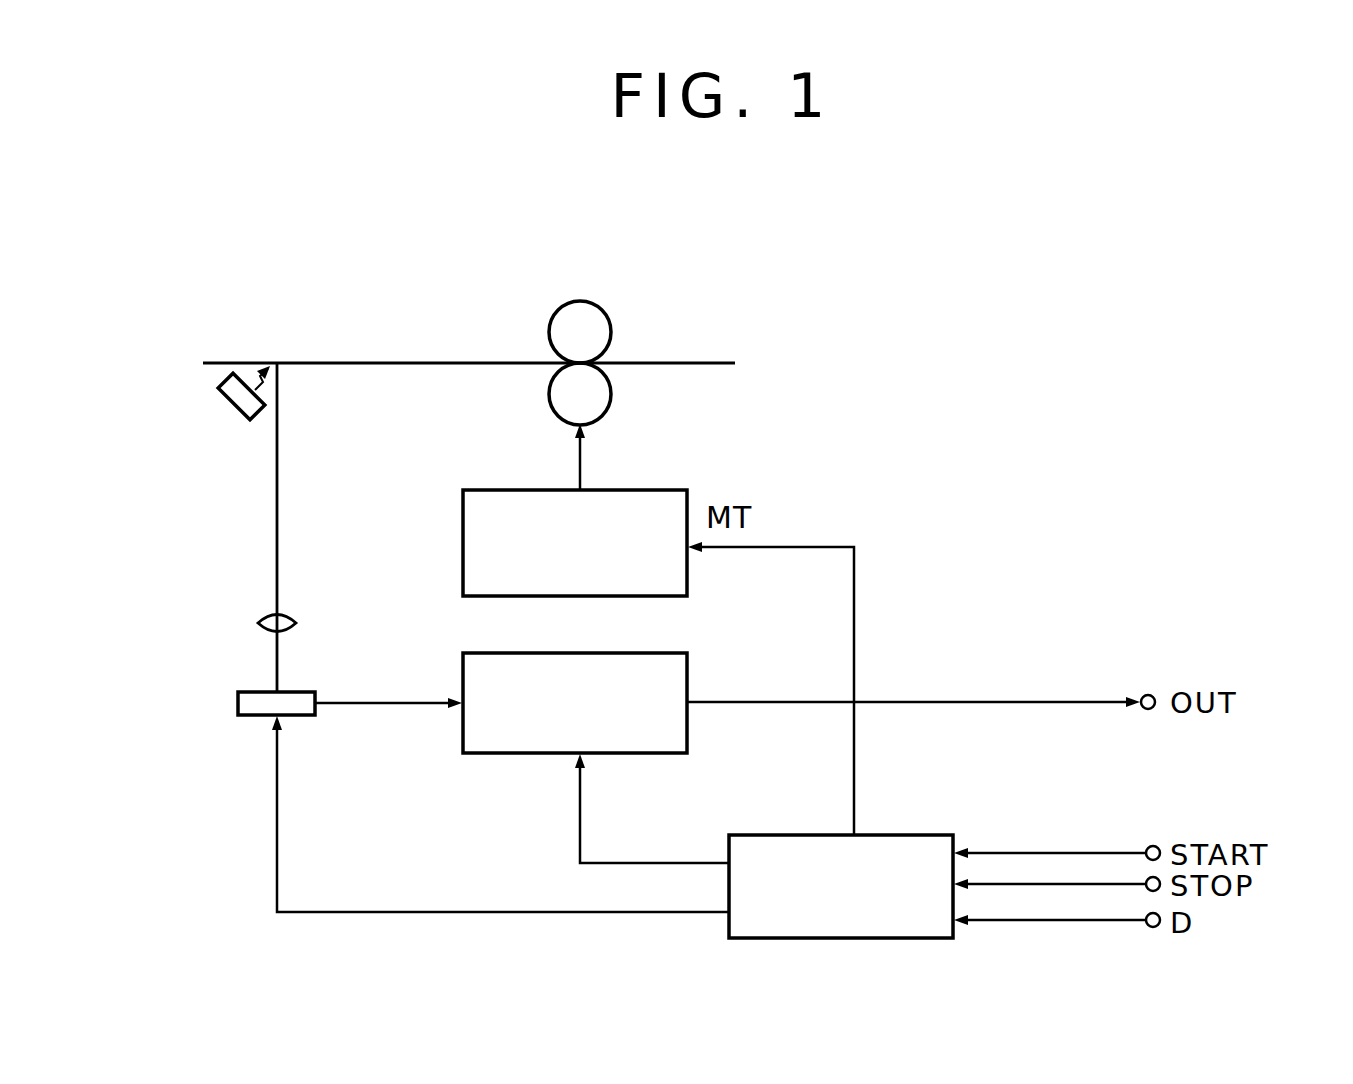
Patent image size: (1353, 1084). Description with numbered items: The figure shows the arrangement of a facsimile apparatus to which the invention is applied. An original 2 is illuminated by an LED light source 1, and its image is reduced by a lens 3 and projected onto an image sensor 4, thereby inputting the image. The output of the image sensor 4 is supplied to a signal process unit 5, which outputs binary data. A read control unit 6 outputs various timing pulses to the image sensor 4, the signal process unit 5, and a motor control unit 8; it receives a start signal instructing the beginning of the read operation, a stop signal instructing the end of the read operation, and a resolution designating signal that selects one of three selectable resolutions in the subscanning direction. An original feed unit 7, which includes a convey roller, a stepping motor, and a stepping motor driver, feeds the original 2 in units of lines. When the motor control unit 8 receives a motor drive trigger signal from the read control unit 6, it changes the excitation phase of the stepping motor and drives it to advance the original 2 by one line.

The LED light source 1 is at (237, 406).
The original 2 is at (360, 362).
The lens 3 is at (293, 615).
The image sensor 4 is at (297, 690).
The signal process unit 5 is at (688, 672).
The read control unit 6 is at (925, 835).
The original feed unit 7 is at (601, 311).
The motor control unit 8 is at (672, 490).